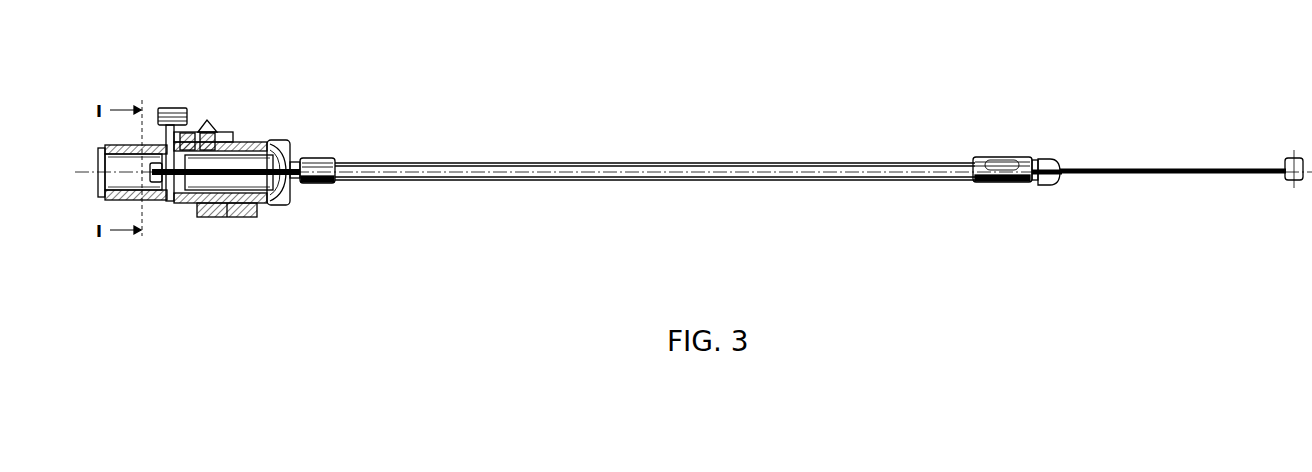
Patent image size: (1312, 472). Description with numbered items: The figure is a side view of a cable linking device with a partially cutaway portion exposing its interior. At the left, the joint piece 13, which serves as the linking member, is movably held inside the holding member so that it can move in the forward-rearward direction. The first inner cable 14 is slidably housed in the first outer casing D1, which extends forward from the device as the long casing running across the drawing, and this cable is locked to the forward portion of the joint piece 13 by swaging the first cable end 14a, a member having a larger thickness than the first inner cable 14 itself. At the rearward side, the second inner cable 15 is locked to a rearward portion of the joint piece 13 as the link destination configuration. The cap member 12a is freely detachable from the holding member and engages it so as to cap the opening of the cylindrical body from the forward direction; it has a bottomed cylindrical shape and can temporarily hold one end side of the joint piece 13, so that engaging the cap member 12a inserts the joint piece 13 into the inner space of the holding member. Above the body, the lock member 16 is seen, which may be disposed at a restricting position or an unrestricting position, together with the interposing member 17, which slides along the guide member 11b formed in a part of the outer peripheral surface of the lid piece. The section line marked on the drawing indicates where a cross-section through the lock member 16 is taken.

The joint piece 13 is at (106, 204).
The first inner cable 14 is at (1146, 168).
The first cable end 14a is at (160, 204).
The second inner cable 15 is at (258, 186).
The lock member 16 is at (167, 106).
The interposing member 17 is at (206, 121).
The guide member 11b is at (226, 138).
The cap member 12a is at (288, 142).
The first outer casing D1 is at (718, 162).